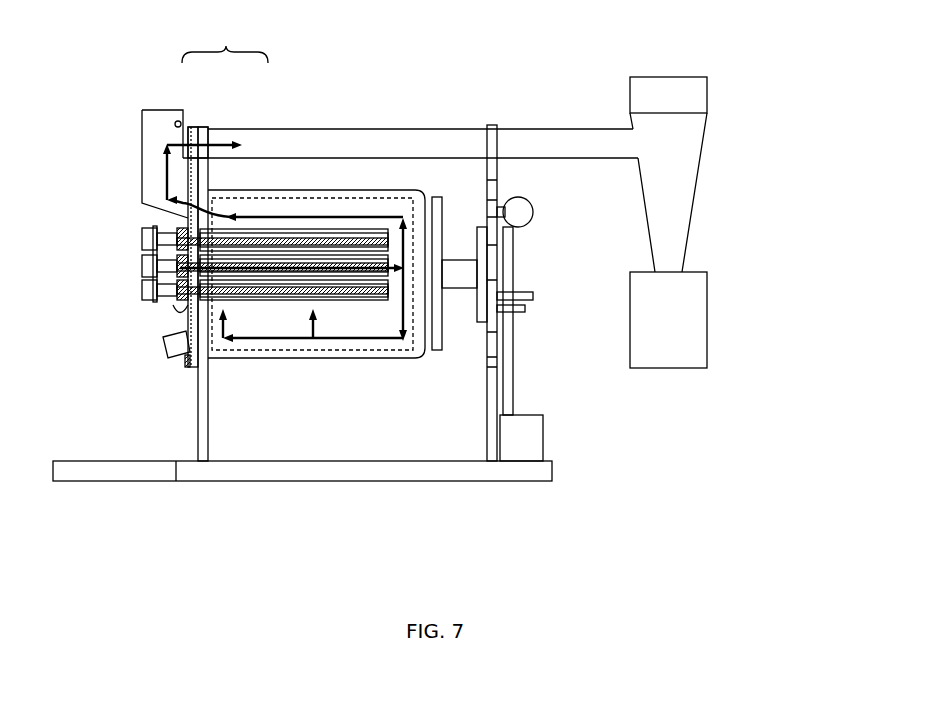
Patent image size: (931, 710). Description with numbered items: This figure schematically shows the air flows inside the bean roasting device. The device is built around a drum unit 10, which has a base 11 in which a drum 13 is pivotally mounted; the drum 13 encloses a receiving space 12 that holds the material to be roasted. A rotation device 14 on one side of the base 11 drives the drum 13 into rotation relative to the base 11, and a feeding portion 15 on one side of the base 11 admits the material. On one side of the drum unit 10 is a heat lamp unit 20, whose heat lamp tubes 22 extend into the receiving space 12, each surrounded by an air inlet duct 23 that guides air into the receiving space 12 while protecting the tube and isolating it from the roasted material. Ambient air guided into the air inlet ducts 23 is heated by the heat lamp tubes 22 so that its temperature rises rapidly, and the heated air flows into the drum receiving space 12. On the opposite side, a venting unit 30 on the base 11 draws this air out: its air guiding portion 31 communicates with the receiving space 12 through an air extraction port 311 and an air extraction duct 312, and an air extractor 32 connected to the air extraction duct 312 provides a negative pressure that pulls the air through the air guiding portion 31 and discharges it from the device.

The drum unit 10 is at (312, 364).
The base 11 is at (188, 385).
The receiving space 12 is at (215, 328).
The drum 13 is at (398, 355).
The rotation device 14 is at (460, 272).
The feeding portion 15 is at (150, 168).
The heat lamp unit 20 is at (135, 263).
The heat lamp tubes 22 is at (328, 238).
The air inlet ducts 23 is at (372, 233).
The venting unit 30 is at (670, 374).
The air guiding portion 31 is at (225, 194).
The air extraction port 311 is at (192, 127).
The air extraction duct 312 is at (238, 136).
The air extractor 32 is at (692, 322).